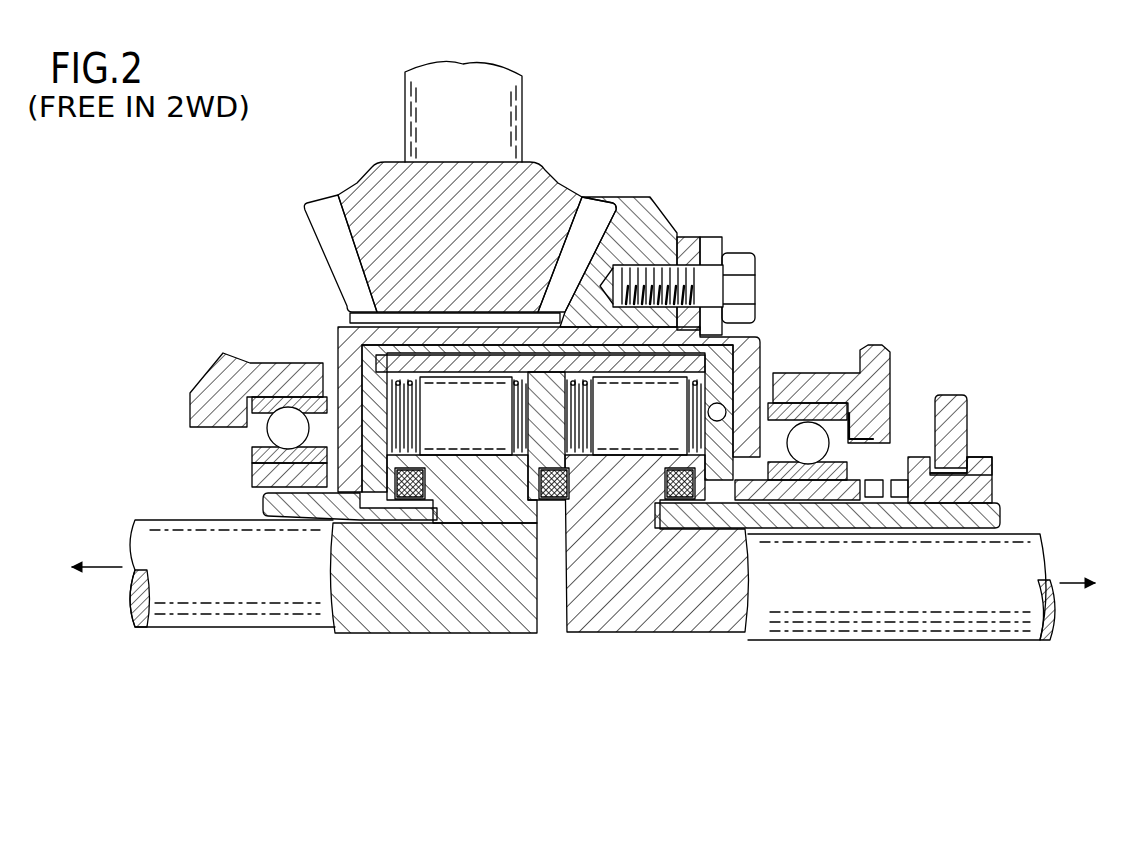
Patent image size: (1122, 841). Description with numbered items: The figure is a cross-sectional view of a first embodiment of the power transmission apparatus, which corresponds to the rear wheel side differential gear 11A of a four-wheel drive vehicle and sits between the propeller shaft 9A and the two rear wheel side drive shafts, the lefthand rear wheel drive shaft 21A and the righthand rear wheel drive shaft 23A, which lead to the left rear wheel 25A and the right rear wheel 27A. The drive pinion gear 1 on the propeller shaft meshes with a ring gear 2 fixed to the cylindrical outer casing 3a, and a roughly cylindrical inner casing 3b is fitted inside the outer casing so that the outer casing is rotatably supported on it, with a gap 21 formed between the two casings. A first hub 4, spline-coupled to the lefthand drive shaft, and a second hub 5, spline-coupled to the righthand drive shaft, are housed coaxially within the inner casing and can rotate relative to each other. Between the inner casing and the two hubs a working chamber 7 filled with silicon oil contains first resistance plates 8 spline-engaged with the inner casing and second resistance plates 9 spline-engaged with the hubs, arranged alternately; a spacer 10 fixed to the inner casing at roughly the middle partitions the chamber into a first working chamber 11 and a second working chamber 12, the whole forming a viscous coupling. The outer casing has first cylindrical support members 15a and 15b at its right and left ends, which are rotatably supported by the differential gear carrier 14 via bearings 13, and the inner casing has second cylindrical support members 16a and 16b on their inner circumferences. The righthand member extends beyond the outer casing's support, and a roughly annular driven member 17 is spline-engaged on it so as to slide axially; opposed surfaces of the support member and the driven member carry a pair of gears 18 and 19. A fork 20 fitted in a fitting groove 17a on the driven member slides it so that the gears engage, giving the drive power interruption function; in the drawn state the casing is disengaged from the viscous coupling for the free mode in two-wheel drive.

The propeller shaft 9A is at (472, 57).
The drive pinion gear 1 is at (557, 190).
The ring gear 2 is at (657, 212).
The rear wheel side differential gear 11A is at (735, 187).
The outer casing 3a is at (743, 322).
The inner casing 3b is at (735, 358).
The working chamber 7 is at (400, 321).
The gap 21 is at (497, 359).
The spacer 10 is at (543, 350).
The first resistance plates 8 is at (416, 396).
The first working chamber 11 is at (479, 432).
The second working chamber 12 is at (642, 436).
The second resistance plates 9 is at (422, 470).
The first hub 4 is at (455, 523).
The second hub 5 is at (617, 529).
The second cylindrical support member 16b is at (295, 512).
The second cylindrical support member 16a is at (792, 530).
The lefthand rear wheel drive shaft 21A is at (178, 629).
The righthand rear wheel drive shaft 23A is at (860, 642).
The first cylindrical support member 15b is at (252, 471).
The first cylindrical support member 15a is at (860, 480).
The differential gear carrier 14 is at (889, 420).
The bearings 13 is at (840, 478).
The gear 18 is at (873, 499).
The gear 19 is at (899, 499).
The driven member 17 is at (972, 462).
The fitting groove 17a is at (962, 455).
The fork 20 is at (950, 397).
The left rear wheel 25A is at (94, 551).
The right rear wheel 27A is at (1082, 568).